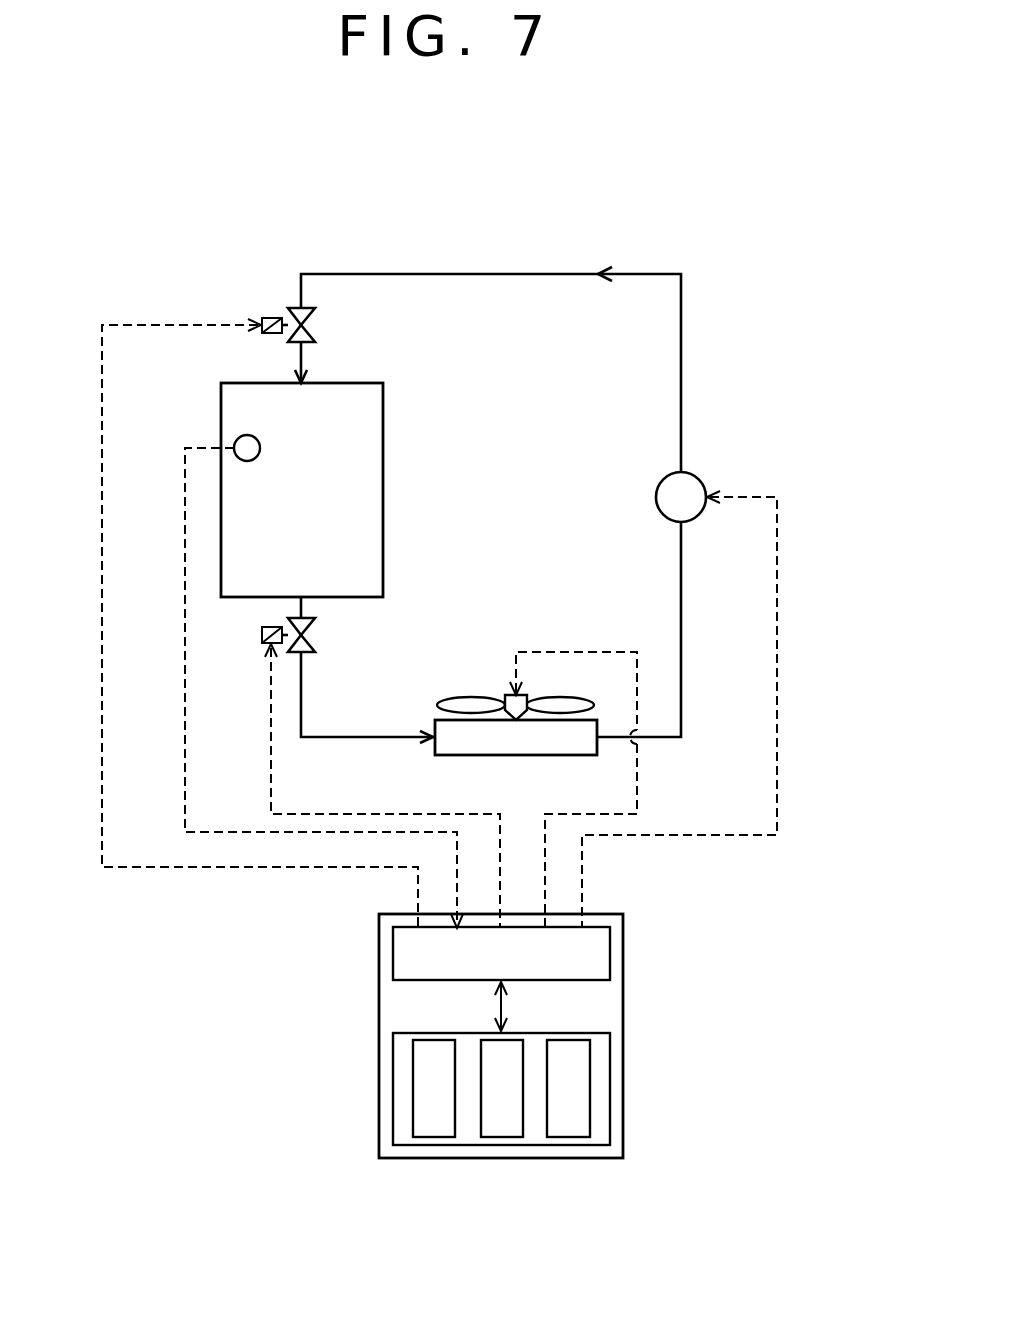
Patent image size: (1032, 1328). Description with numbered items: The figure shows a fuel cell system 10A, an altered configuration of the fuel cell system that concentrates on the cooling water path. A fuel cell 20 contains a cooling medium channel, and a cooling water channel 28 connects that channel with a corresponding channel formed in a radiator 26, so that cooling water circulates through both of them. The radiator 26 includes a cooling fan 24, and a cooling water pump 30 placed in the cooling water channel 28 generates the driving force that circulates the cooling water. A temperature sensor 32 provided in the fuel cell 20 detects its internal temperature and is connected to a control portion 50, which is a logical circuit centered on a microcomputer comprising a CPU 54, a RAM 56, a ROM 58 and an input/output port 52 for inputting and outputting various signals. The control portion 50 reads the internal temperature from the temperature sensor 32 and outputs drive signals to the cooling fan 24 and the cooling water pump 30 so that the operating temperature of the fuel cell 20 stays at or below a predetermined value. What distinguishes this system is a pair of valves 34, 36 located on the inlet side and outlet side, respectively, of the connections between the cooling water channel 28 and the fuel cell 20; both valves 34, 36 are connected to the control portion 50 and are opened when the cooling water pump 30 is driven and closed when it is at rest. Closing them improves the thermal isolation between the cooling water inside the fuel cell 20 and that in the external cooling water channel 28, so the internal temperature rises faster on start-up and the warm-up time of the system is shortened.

The fuel cell system 10A is at (654, 236).
The fuel cell 20 is at (383, 543).
The cooling fan 24 is at (505, 700).
The radiator 26 is at (502, 755).
The cooling water channel 28 is at (681, 635).
The cooling water pump 30 is at (694, 471).
The temperature sensor 32 is at (234, 443).
The valve 34 is at (273, 317).
The valve 36 is at (261, 636).
The control portion 50 is at (623, 1035).
The input/output port 52 is at (393, 943).
The CPU 54 is at (432, 1137).
The RAM 56 is at (499, 1137).
The ROM 58 is at (566, 1137).